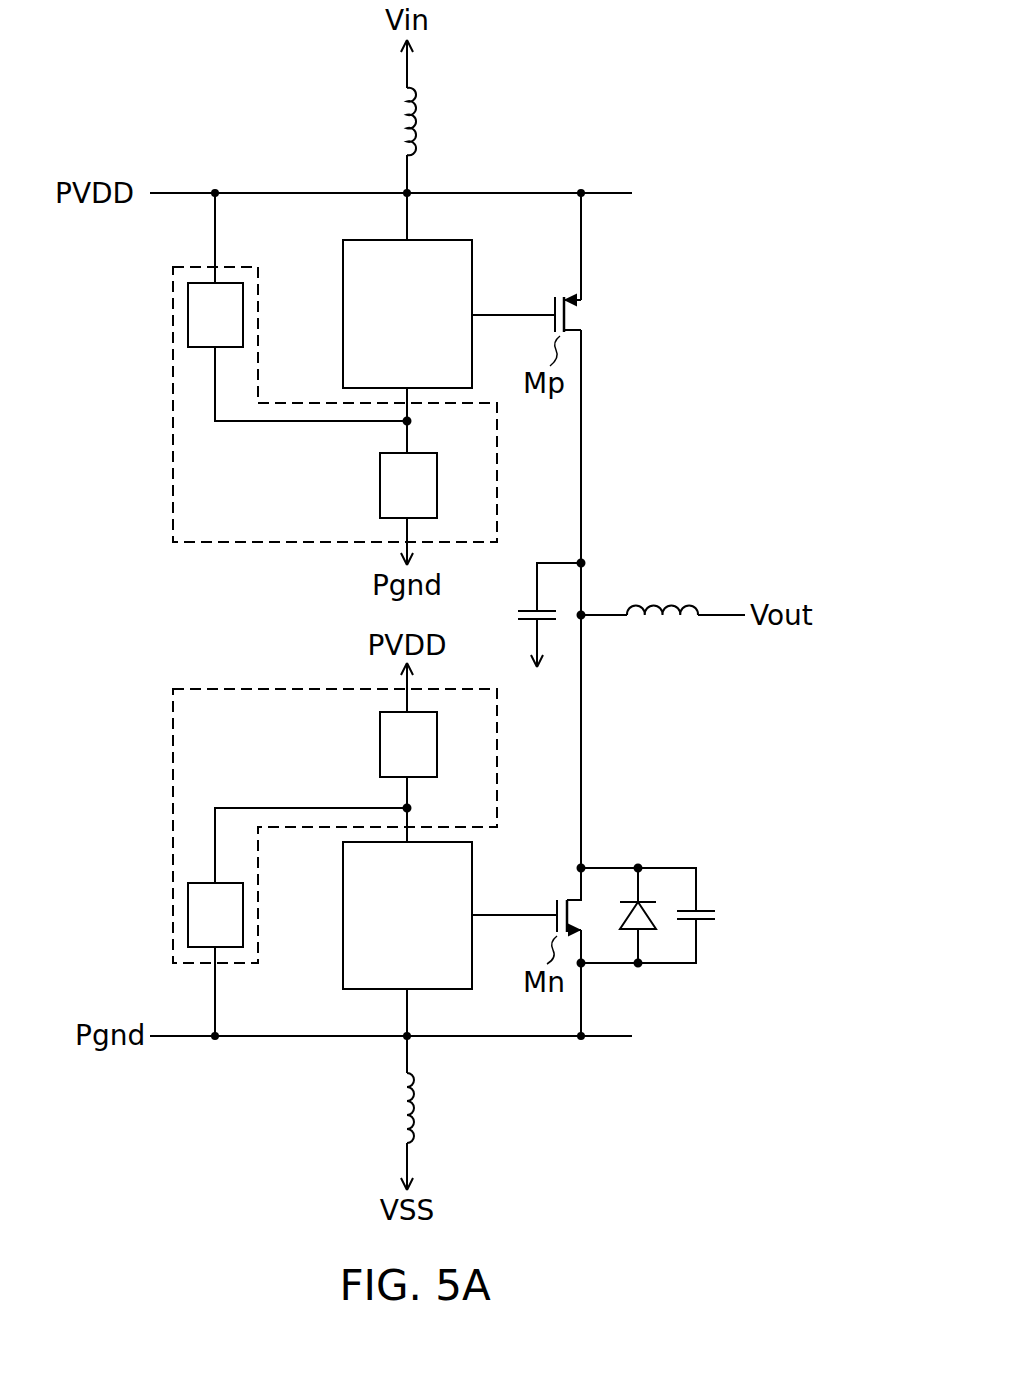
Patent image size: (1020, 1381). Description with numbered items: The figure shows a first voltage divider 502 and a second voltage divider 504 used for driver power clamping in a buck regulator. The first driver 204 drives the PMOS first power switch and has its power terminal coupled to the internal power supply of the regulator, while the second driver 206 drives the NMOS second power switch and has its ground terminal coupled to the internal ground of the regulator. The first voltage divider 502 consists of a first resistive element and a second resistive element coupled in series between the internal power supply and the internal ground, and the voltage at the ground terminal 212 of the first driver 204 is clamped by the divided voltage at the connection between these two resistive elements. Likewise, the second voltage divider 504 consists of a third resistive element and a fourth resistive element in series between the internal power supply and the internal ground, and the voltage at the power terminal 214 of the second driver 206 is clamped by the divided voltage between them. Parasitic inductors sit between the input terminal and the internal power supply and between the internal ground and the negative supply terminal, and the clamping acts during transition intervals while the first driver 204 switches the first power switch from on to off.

The first driver 204 is at (440, 239).
The second driver 206 is at (440, 990).
The ground terminal of the first driver 212 is at (410, 421).
The power terminal of the second driver 214 is at (410, 808).
The first voltage divider 502 is at (172, 407).
The second voltage divider 504 is at (172, 828).